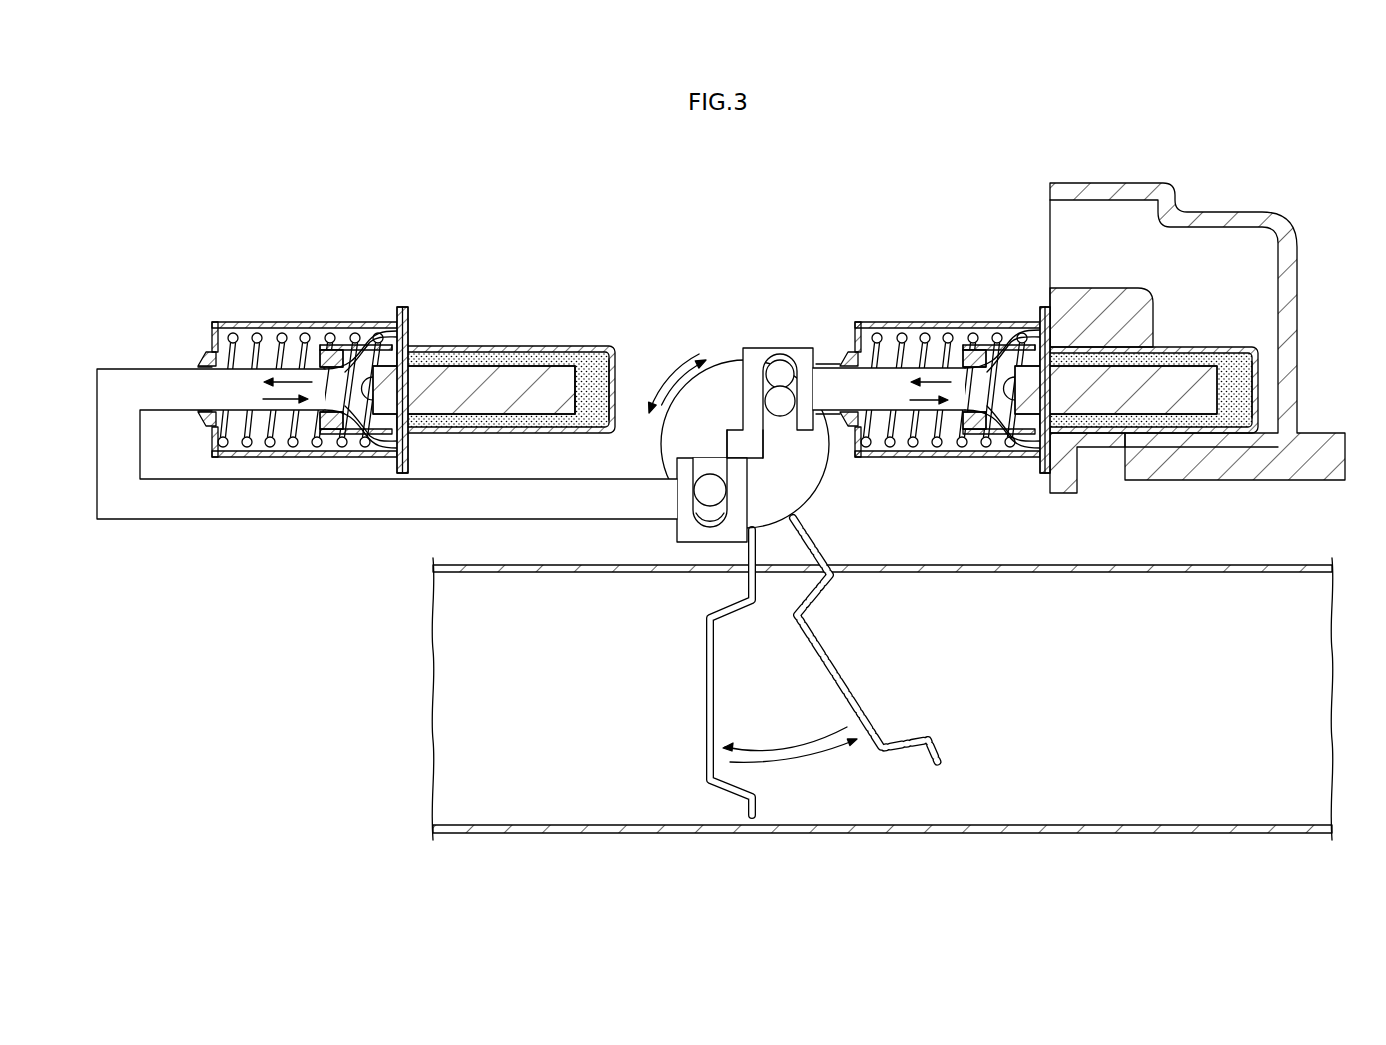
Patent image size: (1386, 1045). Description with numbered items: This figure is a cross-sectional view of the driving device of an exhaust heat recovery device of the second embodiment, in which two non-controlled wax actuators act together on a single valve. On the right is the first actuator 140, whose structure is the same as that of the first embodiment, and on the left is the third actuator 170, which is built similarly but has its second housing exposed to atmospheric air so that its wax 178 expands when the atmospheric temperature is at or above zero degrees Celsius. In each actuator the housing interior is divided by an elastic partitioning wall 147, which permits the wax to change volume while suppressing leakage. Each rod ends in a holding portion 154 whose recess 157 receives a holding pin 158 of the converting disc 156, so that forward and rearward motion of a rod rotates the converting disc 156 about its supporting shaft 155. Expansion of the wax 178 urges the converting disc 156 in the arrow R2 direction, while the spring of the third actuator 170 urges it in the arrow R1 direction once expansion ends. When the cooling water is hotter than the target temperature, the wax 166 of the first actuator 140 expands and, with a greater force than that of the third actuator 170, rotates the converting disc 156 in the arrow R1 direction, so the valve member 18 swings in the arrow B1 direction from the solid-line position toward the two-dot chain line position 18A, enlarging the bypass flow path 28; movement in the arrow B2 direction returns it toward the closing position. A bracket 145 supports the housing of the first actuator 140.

The third actuator 170 is at (387, 355).
The first actuator 140 is at (1087, 343).
The support bracket 145 is at (1222, 238).
The elastic partitioning wall 147 is at (1032, 445).
The holding portion 154 is at (705, 441).
The supporting shaft 155 is at (737, 432).
The converting disc 156 is at (808, 505).
The recess 157 is at (780, 362).
The holding pin 158 is at (708, 488).
The wax 166 is at (1236, 481).
The wax 178 is at (603, 412).
The valve member 18 is at (785, 666).
The arm in rotated position 18A is at (800, 540).
The bypass flow path 28 is at (978, 833).
The arrow R1 direction R1 is at (705, 352).
The arrow R2 direction R2 is at (656, 398).
The arrow B1 direction B1 is at (800, 760).
The arrow B2 direction B2 is at (785, 747).